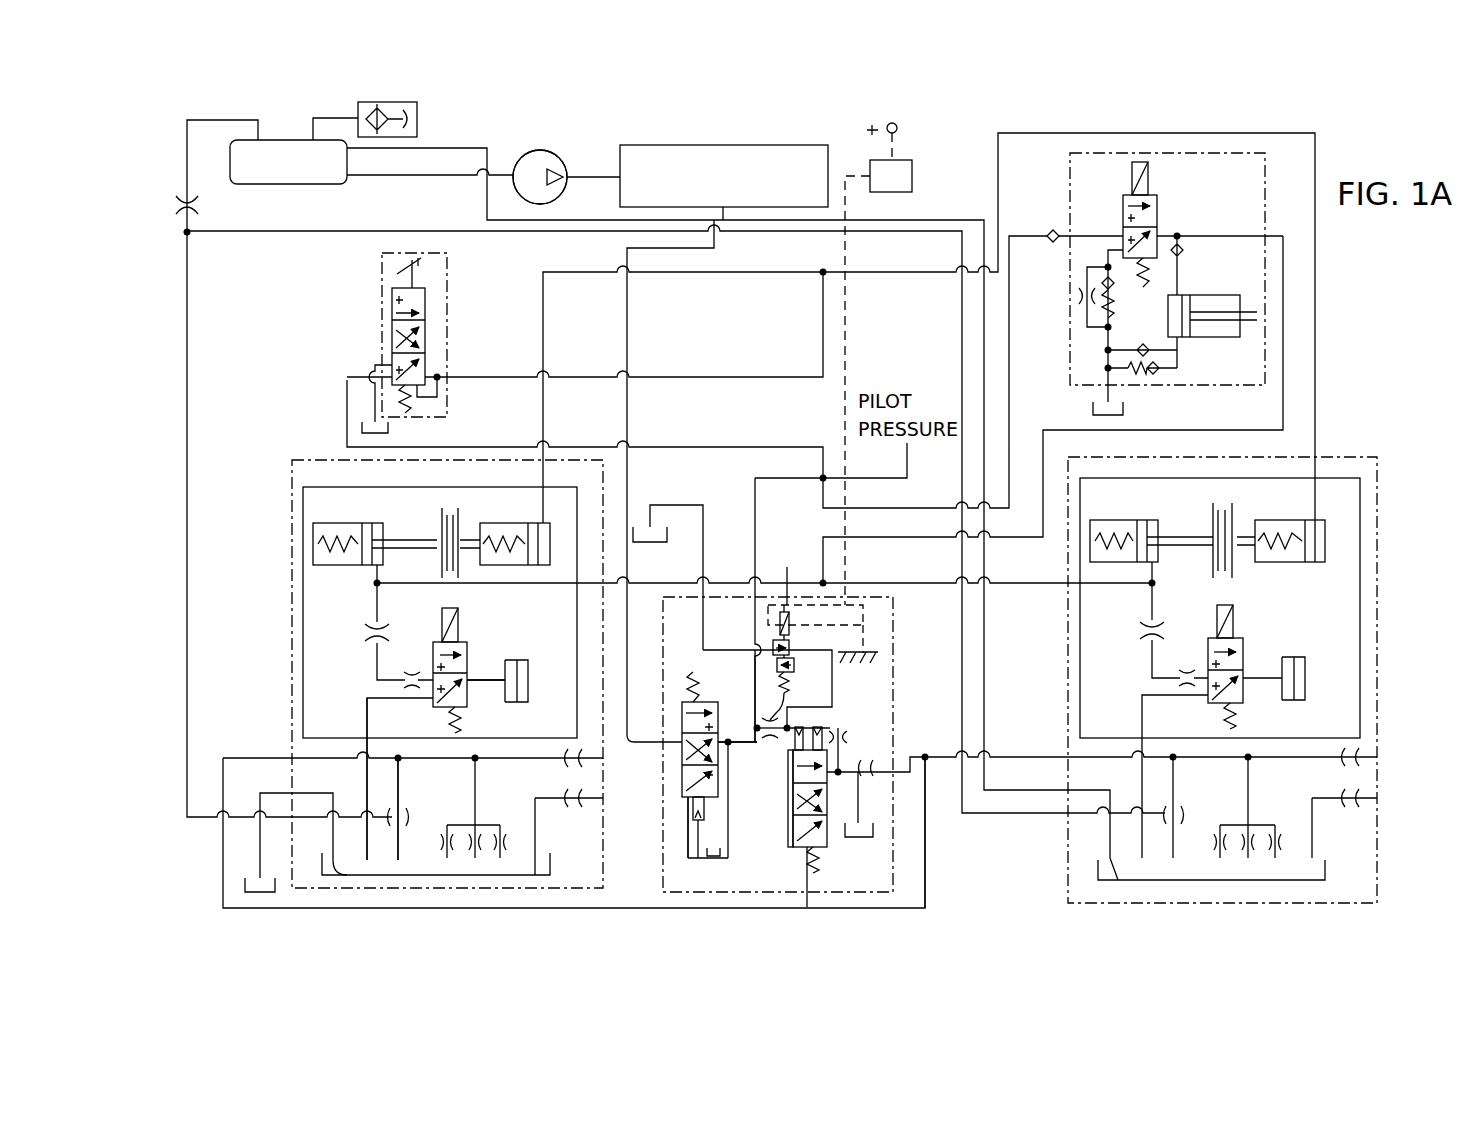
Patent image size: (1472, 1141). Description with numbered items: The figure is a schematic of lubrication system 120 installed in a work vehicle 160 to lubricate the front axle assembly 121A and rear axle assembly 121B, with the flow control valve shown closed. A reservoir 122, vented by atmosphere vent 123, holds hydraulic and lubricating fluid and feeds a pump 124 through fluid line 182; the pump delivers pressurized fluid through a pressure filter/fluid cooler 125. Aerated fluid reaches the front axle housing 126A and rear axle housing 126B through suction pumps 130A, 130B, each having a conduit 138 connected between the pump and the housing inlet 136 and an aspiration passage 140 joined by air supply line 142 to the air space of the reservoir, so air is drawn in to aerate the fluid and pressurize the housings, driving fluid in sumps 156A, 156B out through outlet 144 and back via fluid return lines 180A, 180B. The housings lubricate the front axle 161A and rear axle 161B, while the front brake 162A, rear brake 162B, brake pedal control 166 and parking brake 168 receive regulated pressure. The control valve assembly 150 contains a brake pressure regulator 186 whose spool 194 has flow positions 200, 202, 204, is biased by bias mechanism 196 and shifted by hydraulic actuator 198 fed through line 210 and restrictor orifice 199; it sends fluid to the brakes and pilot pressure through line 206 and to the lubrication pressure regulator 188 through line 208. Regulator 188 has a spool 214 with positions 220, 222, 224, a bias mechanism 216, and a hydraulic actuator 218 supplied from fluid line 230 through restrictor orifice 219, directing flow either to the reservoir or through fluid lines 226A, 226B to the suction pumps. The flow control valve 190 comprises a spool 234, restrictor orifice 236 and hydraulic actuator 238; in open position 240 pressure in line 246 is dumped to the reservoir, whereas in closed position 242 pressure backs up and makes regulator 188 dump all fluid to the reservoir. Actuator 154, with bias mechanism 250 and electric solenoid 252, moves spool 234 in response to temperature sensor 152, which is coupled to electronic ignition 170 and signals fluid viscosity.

The lubrication system 120 is at (298, 126).
The reservoir 122 is at (290, 185).
The atmosphere vent 123 is at (401, 105).
The pump 124 is at (528, 157).
The pressure filter/fluid cooler 125 is at (747, 145).
The front axle housing 126A is at (295, 680).
The rear axle housing 126B is at (1380, 669).
The suction pump 130A is at (407, 831).
The suction pump 130B is at (1185, 828).
The inlet 136 is at (393, 862).
The conduit 138 is at (406, 815).
The aspiration passage 140 is at (399, 813).
The air supply line 142 is at (242, 118).
The outlet 144 is at (347, 876).
The control valve assembly 150 is at (830, 895).
The temperature sensor 152 is at (910, 160).
The actuator 154 is at (797, 613).
The sump 156A is at (550, 864).
The sump 156B is at (1153, 880).
The work vehicle 160 is at (592, 156).
The front axle 161A is at (503, 854).
The rear axle 161B is at (1284, 854).
The front brake 162A is at (300, 595).
The rear brake 162B is at (1360, 577).
The brake pedal control 166 is at (385, 324).
The parking brake 168 is at (1208, 154).
The electronic ignition 170 is at (905, 116).
The fluid return line 180A is at (258, 840).
The fluid return line 180B is at (985, 666).
The fluid line 182 is at (389, 176).
The brake pressure regulator 186 is at (682, 854).
The lubrication pressure regulator 188 is at (868, 868).
The flow control valve 190 is at (778, 633).
The spool 194 is at (688, 858).
The bias mechanism 196 is at (688, 674).
The hydraulic actuator 198 is at (706, 808).
The restrictor orifice 199 is at (713, 858).
The flow position 200 is at (680, 722).
The flow position 202 is at (680, 768).
The flow position 204 is at (681, 808).
The line 206 is at (754, 683).
The line 208 is at (747, 752).
The line 210 is at (739, 840).
The spool 214 is at (811, 894).
The bias mechanism 216 is at (817, 858).
The hydraulic actuator 218 is at (820, 727).
The restrictor orifice 219 is at (888, 742).
The flow position 220 is at (791, 767).
The flow position 222 is at (788, 808).
The flow position 224 is at (790, 840).
The fluid line 226A is at (925, 905).
The fluid line 226B is at (1043, 757).
The fluid line 230 is at (830, 783).
The spool 234 is at (700, 661).
The restrictor orifice 236 is at (777, 720).
The hydraulic actuator 238 is at (793, 724).
The open position 240 is at (880, 652).
The closed position 242 is at (789, 646).
The line 246 is at (833, 701).
The bias mechanism 250 is at (794, 680).
The electric solenoid 252 is at (786, 575).
The front axle assembly 121A is at (270, 460).
The rear axle assembly 121B is at (1390, 498).